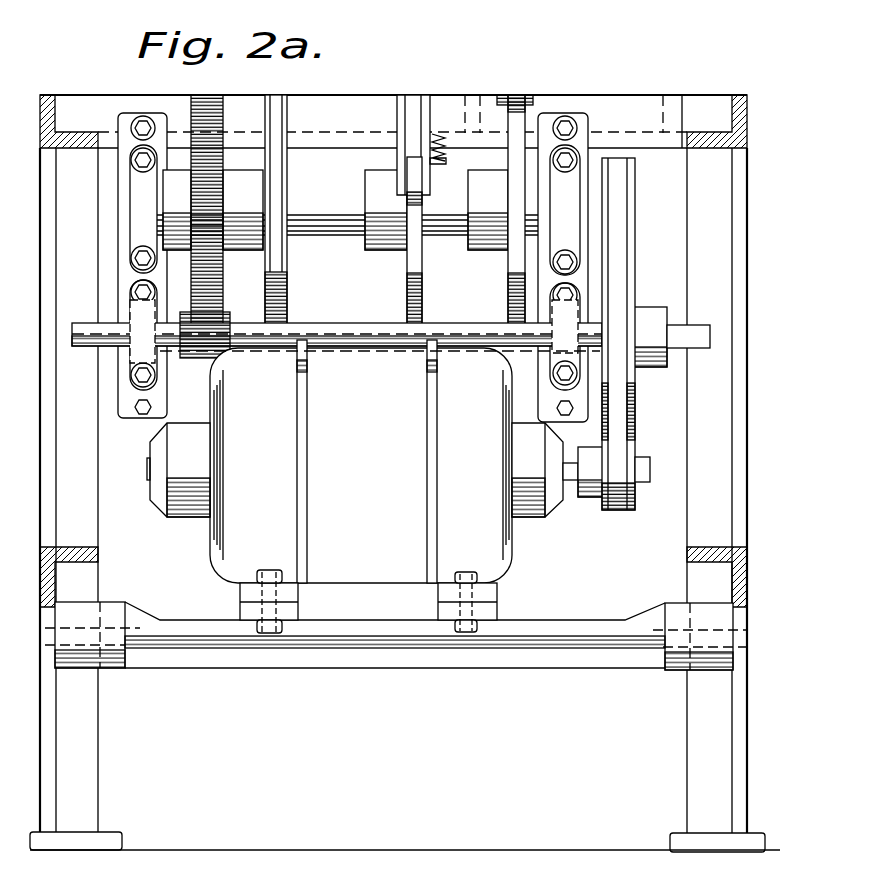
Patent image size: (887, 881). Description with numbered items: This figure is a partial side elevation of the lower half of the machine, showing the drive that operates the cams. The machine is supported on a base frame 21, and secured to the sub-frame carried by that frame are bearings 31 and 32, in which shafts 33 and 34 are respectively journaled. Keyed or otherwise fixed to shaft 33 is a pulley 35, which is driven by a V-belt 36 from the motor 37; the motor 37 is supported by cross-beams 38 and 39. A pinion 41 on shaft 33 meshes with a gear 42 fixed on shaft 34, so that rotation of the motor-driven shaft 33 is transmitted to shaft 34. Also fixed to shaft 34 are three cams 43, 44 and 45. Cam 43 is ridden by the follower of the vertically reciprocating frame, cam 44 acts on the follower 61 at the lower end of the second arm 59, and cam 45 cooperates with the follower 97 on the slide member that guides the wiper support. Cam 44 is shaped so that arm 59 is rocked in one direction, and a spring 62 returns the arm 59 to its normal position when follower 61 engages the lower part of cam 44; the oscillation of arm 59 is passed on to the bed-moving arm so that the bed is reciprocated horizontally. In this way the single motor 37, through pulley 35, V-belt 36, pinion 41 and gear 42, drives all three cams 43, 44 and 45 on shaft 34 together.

The base frame 21 is at (695, 699).
The bearing 31 is at (132, 357).
The bearing 32 is at (138, 222).
The shaft 33 is at (383, 328).
The shaft 34 is at (352, 228).
The pulley 35 is at (635, 218).
The V-belt 36 is at (622, 293).
The motor 37 is at (508, 558).
The cross-beam 38 is at (497, 611).
The cross-beam 39 is at (563, 625).
The pinion 41 is at (192, 358).
The gear 42 is at (236, 290).
The cam 43 is at (287, 298).
The cam 44 is at (425, 268).
The cam 45 is at (508, 298).
The second arm 59 is at (397, 112).
The follower 61 is at (412, 163).
The spring 62 is at (446, 140).
The follower 97 is at (522, 100).